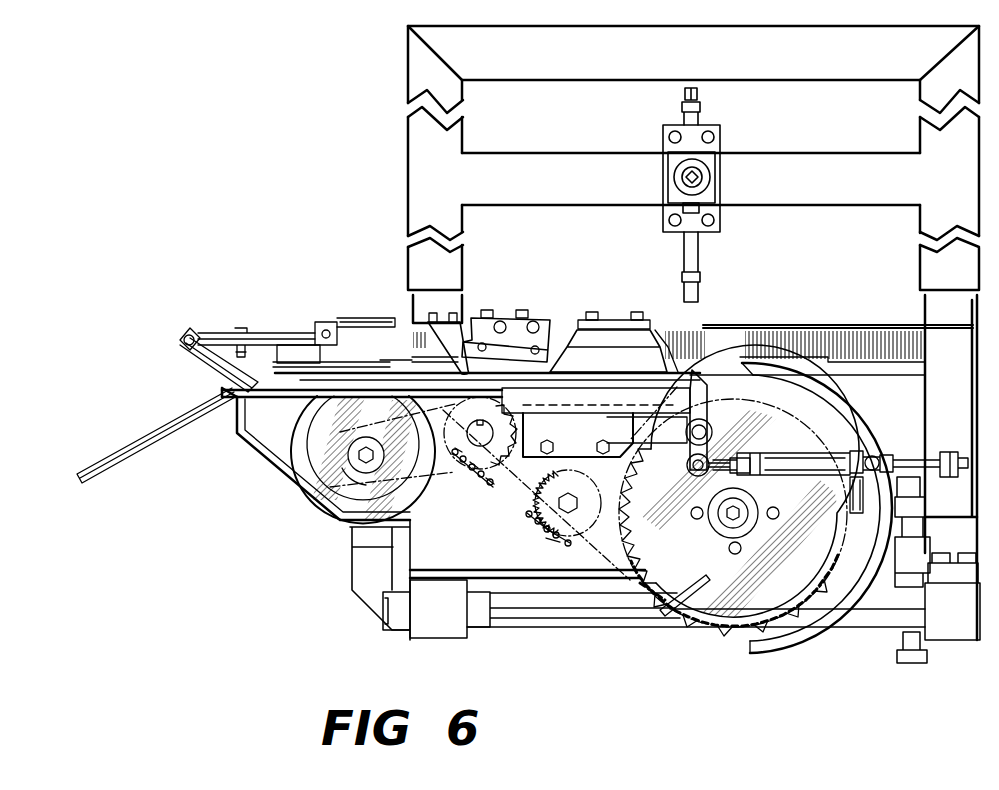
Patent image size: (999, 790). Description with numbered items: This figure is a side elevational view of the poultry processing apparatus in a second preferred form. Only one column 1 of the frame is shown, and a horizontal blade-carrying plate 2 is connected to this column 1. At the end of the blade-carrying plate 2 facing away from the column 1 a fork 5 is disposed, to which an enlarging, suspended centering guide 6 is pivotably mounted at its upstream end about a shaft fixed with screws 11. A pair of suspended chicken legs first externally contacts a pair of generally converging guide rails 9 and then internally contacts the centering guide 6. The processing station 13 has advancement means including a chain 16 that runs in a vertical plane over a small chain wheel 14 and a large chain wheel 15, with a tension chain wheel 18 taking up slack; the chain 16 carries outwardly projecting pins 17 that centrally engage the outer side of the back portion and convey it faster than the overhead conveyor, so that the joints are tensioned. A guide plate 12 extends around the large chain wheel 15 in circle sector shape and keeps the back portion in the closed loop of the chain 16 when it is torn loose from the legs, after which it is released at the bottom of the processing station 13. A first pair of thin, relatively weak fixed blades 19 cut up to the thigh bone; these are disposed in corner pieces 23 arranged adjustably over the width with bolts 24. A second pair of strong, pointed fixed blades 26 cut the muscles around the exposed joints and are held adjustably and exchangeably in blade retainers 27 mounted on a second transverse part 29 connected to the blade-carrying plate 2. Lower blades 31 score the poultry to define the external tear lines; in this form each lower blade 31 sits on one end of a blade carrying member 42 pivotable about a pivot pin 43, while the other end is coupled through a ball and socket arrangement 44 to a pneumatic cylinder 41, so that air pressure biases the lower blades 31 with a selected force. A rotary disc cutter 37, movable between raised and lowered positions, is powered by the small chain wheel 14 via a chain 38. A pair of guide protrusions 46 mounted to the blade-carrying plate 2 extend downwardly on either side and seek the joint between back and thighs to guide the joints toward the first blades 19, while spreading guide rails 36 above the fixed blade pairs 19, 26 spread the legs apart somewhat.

The column 1 is at (962, 366).
The blade-carrying plate 2 is at (848, 353).
The fork 5 is at (233, 332).
The centering guide 6 is at (213, 362).
The guide rails 9 is at (112, 455).
The screws 11 is at (182, 335).
The guide plate 12 is at (790, 650).
The processing station 13 is at (597, 648).
The small chain wheel 14 is at (500, 458).
The large chain wheel 15 is at (793, 580).
The chain 16 is at (530, 521).
The pins 17 is at (545, 540).
The tension chain wheel 18 is at (545, 484).
The first fixed blades 19 is at (528, 368).
The corner pieces 23 is at (543, 320).
The bolts 24 is at (490, 314).
The second fixed blades 26 is at (660, 363).
The blade retainers 27 is at (608, 365).
The second transverse part 29 is at (605, 318).
The lower blades 31 is at (707, 387).
The spreading guide rails 36 is at (373, 320).
The rotary disc cutter 37 is at (305, 478).
The chain 38 is at (455, 470).
The pneumatic cylinders 41 is at (797, 458).
The blade carrying members 42 is at (710, 426).
The pivot pins 43 is at (685, 464).
The ball and socket arrangement 44 is at (685, 477).
The guide protrusions 46 is at (430, 345).